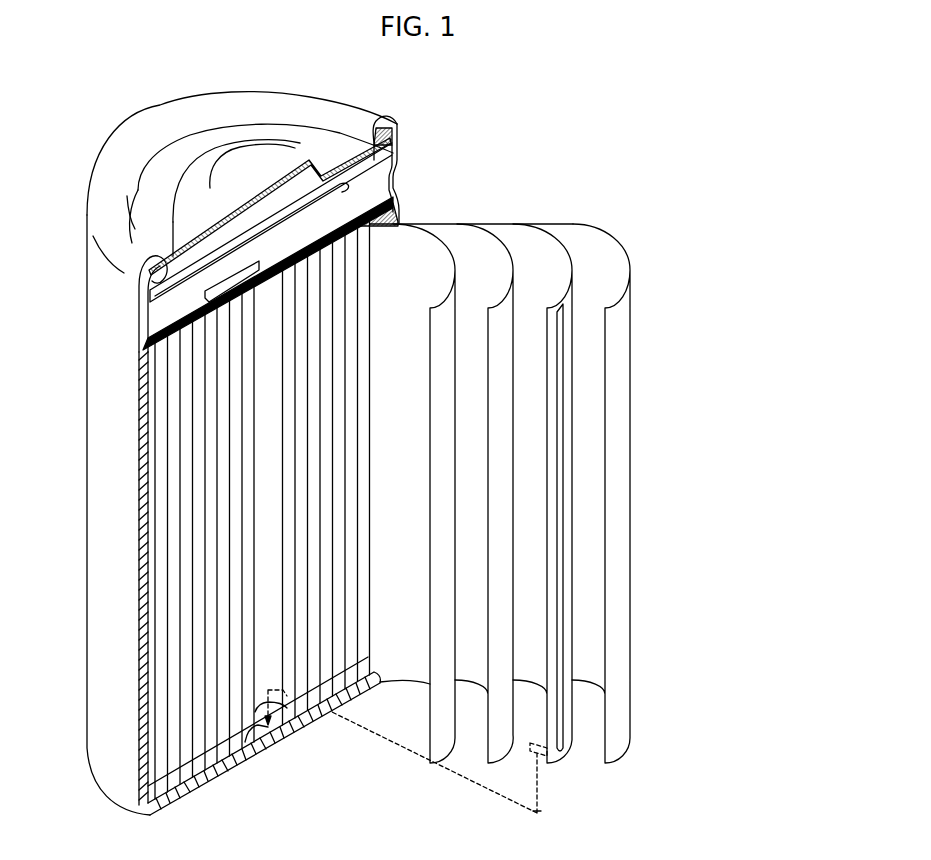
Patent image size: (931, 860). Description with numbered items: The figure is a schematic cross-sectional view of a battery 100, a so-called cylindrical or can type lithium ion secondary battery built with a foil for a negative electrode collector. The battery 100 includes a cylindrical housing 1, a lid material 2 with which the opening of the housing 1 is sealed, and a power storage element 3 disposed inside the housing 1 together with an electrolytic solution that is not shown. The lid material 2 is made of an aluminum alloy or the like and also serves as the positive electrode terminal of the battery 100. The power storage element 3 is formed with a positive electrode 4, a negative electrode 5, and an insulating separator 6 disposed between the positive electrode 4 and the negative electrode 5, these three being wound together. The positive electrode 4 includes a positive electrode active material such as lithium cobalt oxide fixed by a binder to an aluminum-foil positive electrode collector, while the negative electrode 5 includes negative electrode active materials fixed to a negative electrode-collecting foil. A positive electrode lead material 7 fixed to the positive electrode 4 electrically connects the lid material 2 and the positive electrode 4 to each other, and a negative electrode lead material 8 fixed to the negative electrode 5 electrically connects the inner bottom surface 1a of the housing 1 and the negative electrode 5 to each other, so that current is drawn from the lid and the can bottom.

The battery 100 is at (722, 103).
The housing 1 is at (105, 510).
The inner bottom surface 1a is at (260, 733).
The lid material 2 is at (180, 161).
The positive electrode lead material 7 is at (257, 300).
The power storage element 3 is at (727, 415).
The positive electrode 4 is at (440, 432).
The negative electrode 5 is at (573, 512).
The insulating separator 6 is at (618, 328).
The negative electrode lead material 8 is at (560, 640).